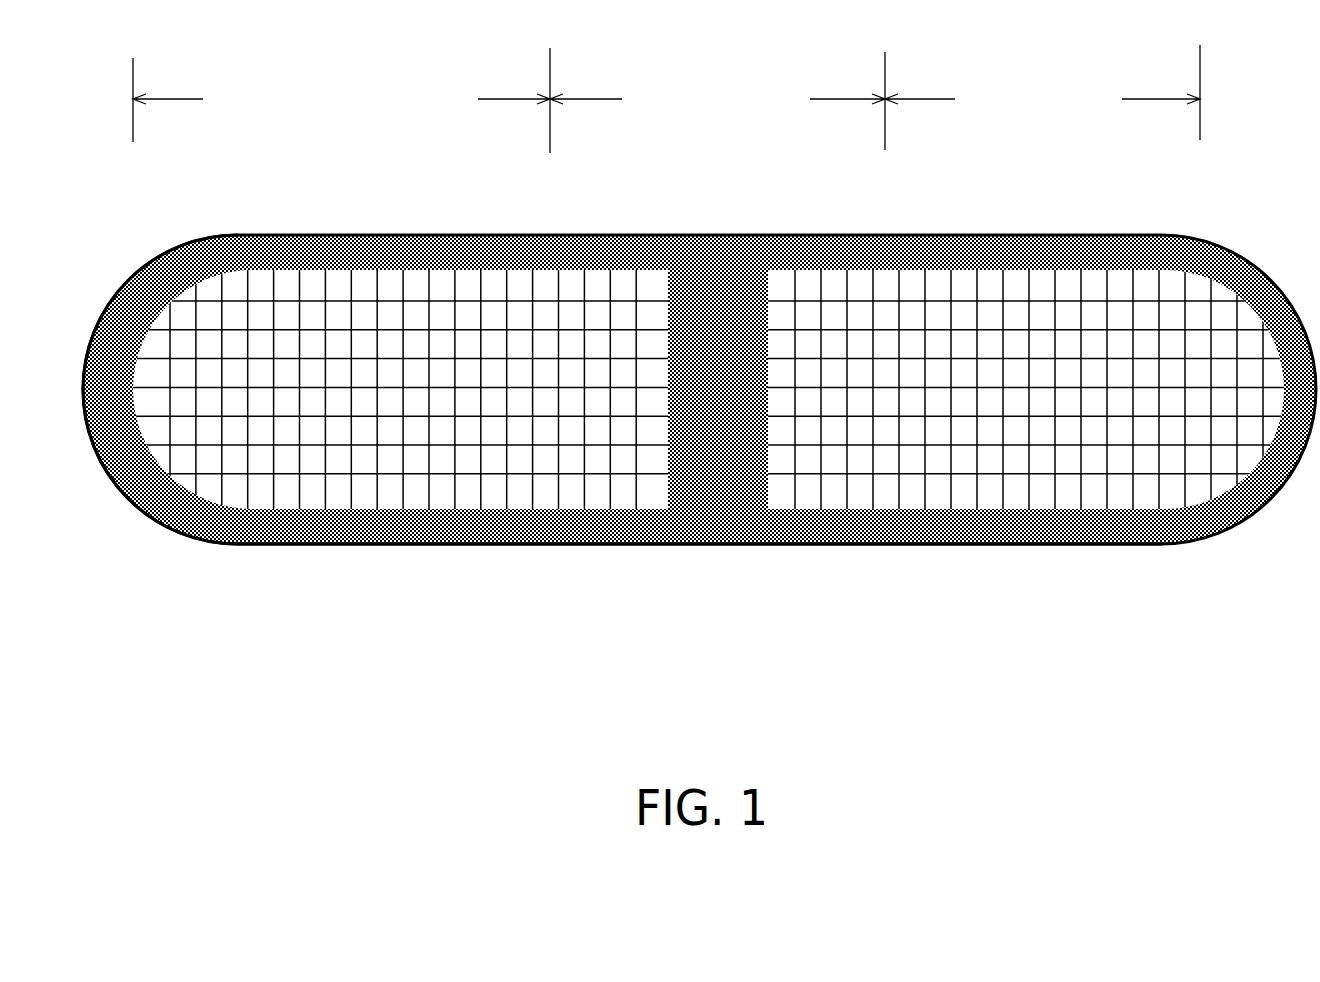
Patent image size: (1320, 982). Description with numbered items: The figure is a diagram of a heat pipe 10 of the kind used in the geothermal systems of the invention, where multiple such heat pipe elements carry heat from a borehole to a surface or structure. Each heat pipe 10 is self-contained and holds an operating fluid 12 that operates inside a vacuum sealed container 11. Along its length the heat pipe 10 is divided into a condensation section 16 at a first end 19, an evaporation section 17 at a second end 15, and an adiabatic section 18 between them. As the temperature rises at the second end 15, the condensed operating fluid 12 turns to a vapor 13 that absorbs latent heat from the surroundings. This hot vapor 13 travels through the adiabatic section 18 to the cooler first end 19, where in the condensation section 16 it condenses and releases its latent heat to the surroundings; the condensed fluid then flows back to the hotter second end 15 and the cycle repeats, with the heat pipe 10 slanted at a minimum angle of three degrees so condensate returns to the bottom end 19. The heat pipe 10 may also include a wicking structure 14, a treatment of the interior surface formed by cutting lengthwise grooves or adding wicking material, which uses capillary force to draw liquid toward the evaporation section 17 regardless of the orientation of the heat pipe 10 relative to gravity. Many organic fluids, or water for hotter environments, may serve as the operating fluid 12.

The heat pipe 10 is at (699, 431).
The vacuum sealed container 11 is at (723, 558).
The operating fluid 12 is at (399, 389).
The vapor 13 is at (664, 278).
The wicking structure 14 is at (1029, 389).
The second end 15 is at (1202, 235).
The condensation section 16 is at (341, 100).
The evaporation section 17 is at (1042, 92).
The adiabatic section 18 is at (717, 101).
The first end 19 is at (158, 525).